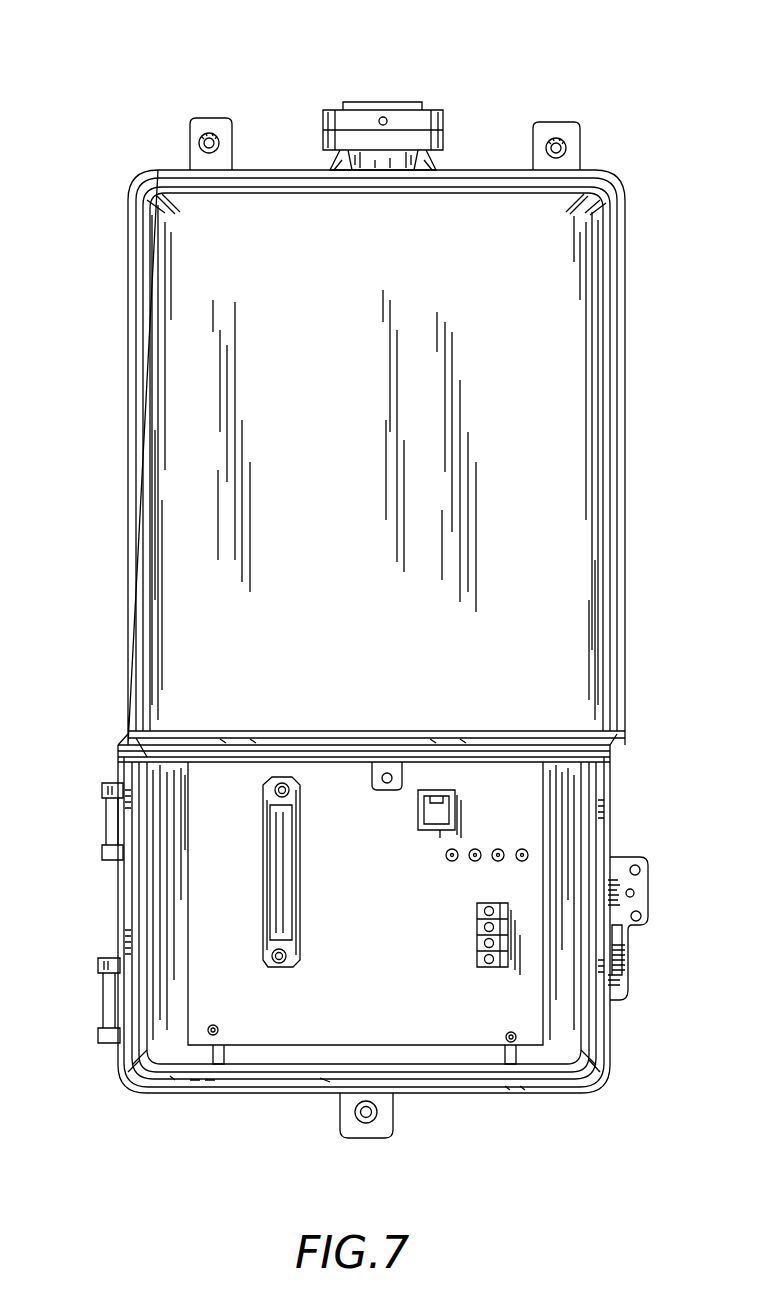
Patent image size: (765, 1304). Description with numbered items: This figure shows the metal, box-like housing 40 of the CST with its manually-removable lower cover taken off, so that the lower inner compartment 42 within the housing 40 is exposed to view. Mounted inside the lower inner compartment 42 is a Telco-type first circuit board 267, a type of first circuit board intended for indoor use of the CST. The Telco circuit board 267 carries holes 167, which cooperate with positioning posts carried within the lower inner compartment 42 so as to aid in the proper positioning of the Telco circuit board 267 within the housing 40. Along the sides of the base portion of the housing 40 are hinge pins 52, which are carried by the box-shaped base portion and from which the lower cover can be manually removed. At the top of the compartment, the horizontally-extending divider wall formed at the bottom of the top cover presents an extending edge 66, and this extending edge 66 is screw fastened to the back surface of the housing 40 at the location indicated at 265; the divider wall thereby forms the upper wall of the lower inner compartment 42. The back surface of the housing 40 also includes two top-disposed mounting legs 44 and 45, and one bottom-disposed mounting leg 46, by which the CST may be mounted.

The housing 40 is at (388, 585).
The lower inner compartment 42 is at (650, 818).
The top-disposed mounting leg 44 is at (561, 148).
The top-disposed mounting leg 45 is at (204, 143).
The bottom-disposed mounting leg 46 is at (380, 1128).
The hinge pins 52 is at (107, 836).
The extending edge of divider wall 66 is at (240, 757).
The holes 167 is at (507, 1036).
The screw fastening of divider wall edge 265 is at (388, 774).
The Telco circuit board 267 is at (378, 931).